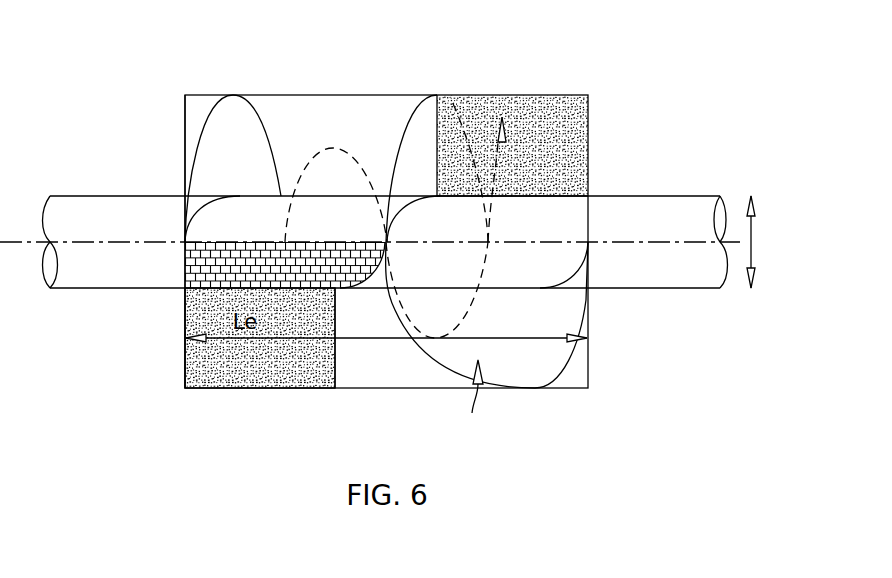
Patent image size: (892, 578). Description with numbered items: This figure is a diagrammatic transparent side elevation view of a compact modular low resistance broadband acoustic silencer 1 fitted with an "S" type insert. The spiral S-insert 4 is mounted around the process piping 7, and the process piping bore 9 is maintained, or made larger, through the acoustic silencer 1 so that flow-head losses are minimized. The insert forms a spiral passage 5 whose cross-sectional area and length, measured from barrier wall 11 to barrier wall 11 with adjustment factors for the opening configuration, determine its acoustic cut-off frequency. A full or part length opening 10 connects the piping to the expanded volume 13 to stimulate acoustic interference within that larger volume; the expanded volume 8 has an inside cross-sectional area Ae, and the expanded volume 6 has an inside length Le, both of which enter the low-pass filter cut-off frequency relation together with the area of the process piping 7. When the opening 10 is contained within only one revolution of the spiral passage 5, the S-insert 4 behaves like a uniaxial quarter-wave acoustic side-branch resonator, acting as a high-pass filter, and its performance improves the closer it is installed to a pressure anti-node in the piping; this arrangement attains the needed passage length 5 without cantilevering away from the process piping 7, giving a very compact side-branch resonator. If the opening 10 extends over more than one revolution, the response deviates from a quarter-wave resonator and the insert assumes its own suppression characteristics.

The acoustic silencer 1 is at (580, 77).
The S-insert 4 is at (413, 111).
The spiral passage 5 is at (331, 147).
The expanded volume 6 is at (248, 342).
The process piping 7 is at (672, 280).
The expanded volume 8 is at (184, 130).
The process piping bore 9 is at (761, 242).
The opening 10 is at (166, 268).
The barrier wall 11 is at (586, 126).
The expanded volume 13 is at (484, 282).